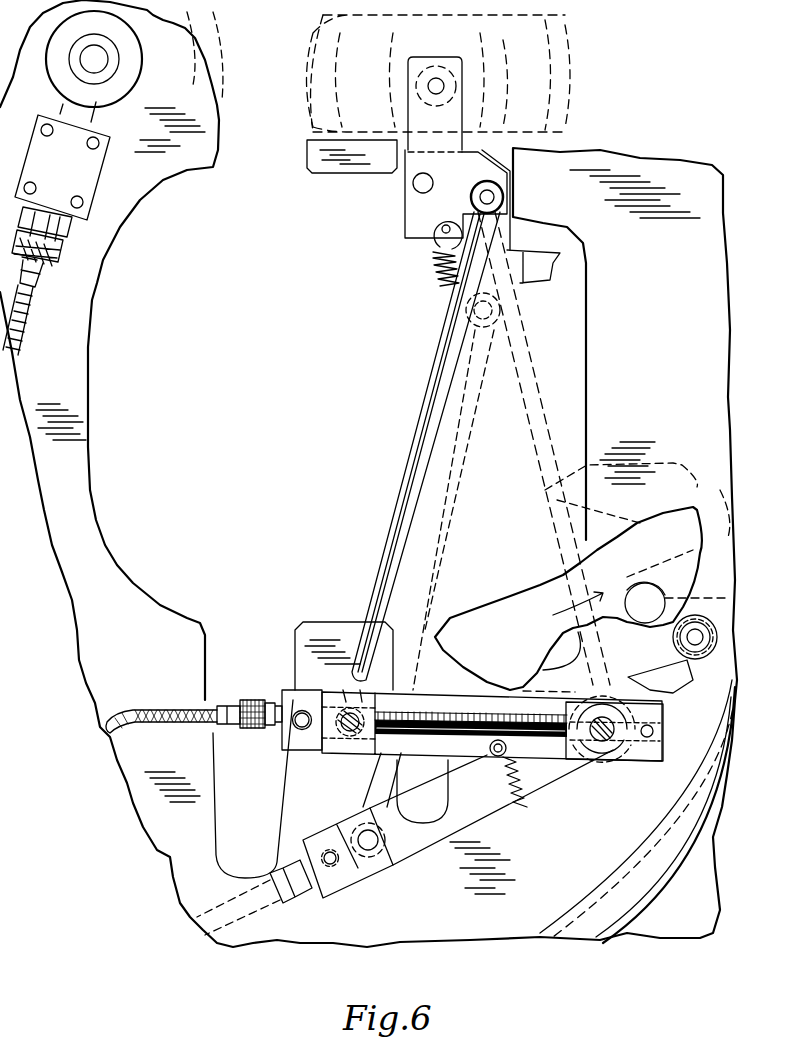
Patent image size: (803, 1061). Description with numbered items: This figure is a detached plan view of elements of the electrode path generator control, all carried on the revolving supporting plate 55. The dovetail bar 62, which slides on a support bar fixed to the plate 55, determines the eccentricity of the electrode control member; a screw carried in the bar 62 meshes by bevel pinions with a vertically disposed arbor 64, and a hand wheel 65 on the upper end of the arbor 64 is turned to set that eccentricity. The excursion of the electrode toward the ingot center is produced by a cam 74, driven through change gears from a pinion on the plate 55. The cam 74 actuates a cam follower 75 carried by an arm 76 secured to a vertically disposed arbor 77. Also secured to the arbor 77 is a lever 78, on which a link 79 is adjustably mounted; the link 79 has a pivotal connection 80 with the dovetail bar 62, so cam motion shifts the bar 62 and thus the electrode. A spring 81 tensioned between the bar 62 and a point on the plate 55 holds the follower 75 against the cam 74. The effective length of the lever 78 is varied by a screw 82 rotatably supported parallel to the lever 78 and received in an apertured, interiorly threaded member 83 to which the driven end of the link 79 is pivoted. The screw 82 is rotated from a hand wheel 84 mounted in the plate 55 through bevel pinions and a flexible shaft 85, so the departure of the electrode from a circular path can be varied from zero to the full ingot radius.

The supporting plate 55 is at (368, 473).
The dovetail bar 62 is at (412, 228).
The arbor 64 is at (445, 88).
The hand wheel 65 is at (323, 67).
The cam 74 is at (690, 567).
The cam follower 75 is at (702, 630).
The arm 76 is at (633, 673).
The arbor 77 is at (601, 742).
The lever 78 is at (640, 762).
The link 79 is at (565, 472).
The pivotal connection 80 is at (472, 197).
The spring 81 is at (432, 268).
The screw 82 is at (434, 694).
The threaded member 83 is at (330, 752).
The hand wheel 84 is at (218, 60).
The flexible shaft 85 is at (105, 714).